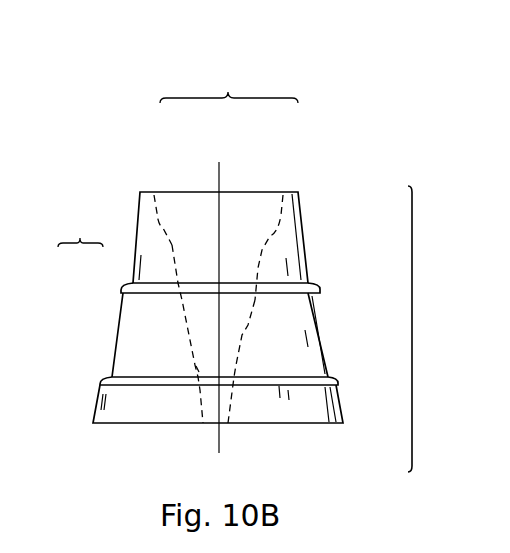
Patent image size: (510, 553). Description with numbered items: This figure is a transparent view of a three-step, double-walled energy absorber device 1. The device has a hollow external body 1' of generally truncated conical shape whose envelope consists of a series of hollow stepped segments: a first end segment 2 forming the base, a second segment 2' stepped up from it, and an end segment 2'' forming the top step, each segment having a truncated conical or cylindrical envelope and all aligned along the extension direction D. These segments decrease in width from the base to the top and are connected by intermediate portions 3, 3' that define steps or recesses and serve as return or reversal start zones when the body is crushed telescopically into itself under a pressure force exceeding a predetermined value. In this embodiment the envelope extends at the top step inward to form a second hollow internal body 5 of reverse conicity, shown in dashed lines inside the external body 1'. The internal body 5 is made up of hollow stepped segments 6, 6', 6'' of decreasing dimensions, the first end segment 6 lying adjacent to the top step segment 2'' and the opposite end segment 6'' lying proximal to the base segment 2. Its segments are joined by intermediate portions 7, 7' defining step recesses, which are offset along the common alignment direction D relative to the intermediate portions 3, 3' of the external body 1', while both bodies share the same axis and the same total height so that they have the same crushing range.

The energy absorber device 1 is at (216, 259).
The hollow body 1' is at (443, 329).
The first end segment 2 is at (237, 430).
The second segment 2' is at (254, 335).
The end segment forming the top step 2'' is at (255, 237).
The intermediate portion 3 is at (247, 363).
The intermediate portion 3' is at (249, 270).
The hollow internal body 5 is at (228, 96).
The first end segment 6 is at (168, 176).
The hollow stepped segment 6' is at (270, 204).
The second opposite end segment 6'' is at (134, 312).
The intermediate portion 7 is at (191, 265).
The intermediate portion 7' is at (244, 265).
The extension direction D is at (218, 441).